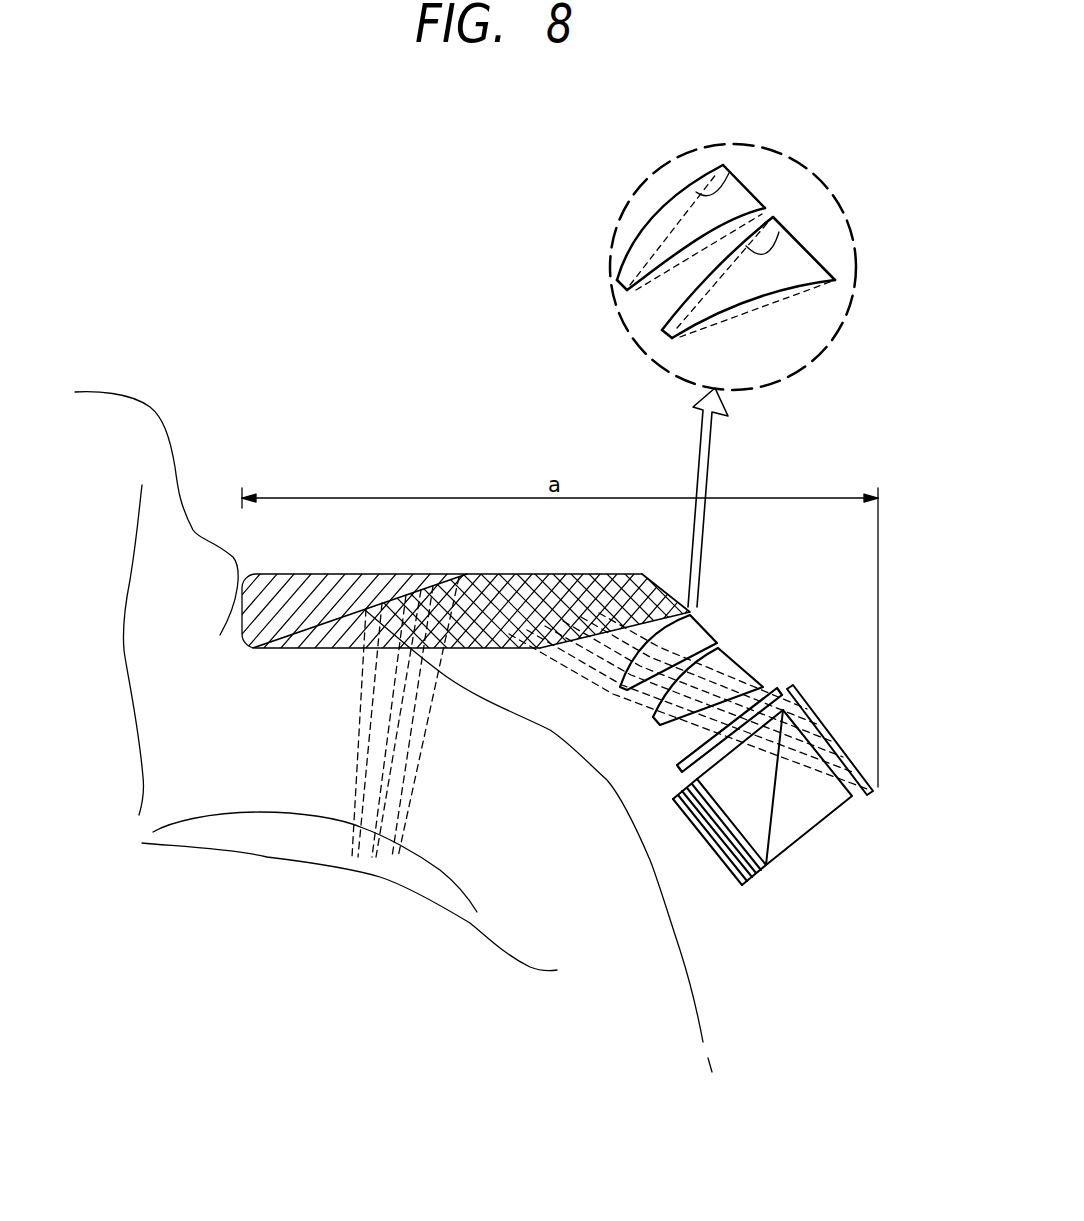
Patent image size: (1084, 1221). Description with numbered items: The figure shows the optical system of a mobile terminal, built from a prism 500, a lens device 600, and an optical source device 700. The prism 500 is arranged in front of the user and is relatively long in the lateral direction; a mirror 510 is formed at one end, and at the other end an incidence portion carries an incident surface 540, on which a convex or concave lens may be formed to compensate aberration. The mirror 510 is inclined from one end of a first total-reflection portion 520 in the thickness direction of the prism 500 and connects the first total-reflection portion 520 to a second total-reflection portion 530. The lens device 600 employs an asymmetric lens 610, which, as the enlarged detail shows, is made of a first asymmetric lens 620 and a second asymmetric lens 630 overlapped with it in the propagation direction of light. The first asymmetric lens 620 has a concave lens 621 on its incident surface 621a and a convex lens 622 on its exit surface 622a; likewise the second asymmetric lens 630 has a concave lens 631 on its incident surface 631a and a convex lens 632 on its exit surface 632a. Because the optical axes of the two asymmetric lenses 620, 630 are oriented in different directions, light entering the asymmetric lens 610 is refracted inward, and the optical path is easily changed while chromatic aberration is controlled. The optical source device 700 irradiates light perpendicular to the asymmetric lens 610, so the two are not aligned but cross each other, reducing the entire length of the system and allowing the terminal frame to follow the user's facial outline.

The prism 500 is at (370, 576).
The mirror 510 is at (294, 635).
The first total-reflection portion 520 is at (640, 573).
The second total-reflection portion 530 is at (542, 652).
The incident surface 540 is at (652, 604).
The lens device 600 is at (708, 593).
The asymmetric lens 610 is at (635, 740).
The first asymmetric lens 620 is at (773, 309).
The concave lens 621 is at (762, 305).
The incident surface 621a is at (797, 293).
The convex lens 622 is at (708, 268).
The exit surface 622a is at (765, 243).
The second asymmetric lens 630 is at (660, 234).
The concave lens 631 is at (660, 268).
The incident surface 631a is at (672, 268).
The convex lens 632 is at (677, 193).
The exit surface 632a is at (724, 168).
The optical source device 700 is at (808, 672).